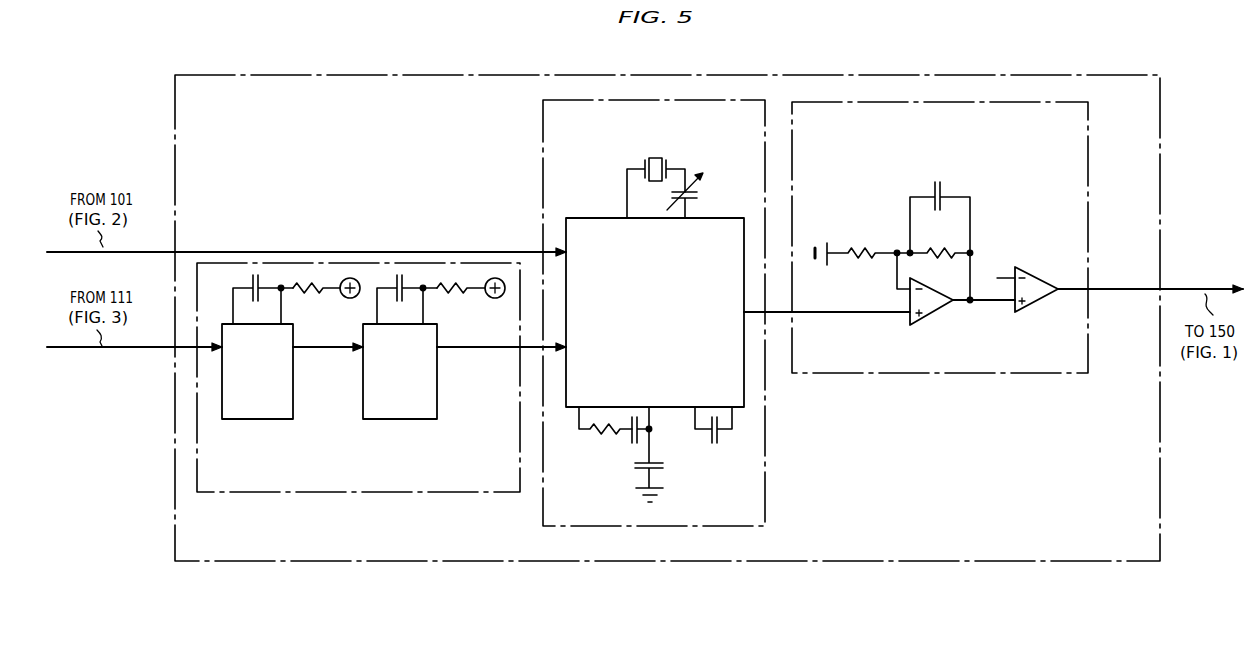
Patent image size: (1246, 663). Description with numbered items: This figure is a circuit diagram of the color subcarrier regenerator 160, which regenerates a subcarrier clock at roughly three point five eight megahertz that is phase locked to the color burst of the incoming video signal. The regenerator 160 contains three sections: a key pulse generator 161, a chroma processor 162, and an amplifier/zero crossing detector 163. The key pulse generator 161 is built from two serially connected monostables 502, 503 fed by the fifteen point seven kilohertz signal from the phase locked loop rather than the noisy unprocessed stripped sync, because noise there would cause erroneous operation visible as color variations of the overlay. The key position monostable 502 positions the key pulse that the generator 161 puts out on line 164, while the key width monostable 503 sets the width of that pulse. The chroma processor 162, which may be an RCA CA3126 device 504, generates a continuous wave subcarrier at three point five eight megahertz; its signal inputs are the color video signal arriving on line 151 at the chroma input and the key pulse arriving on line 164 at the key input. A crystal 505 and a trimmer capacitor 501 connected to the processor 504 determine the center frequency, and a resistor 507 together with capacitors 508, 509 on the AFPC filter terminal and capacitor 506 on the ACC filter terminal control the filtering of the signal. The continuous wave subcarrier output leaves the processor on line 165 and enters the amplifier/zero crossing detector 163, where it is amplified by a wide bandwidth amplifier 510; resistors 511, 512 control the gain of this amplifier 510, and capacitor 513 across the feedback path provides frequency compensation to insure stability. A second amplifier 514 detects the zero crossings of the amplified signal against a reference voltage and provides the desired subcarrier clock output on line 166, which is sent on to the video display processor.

The color subcarrier regenerator 160 is at (175, 103).
The color video signal line 151 is at (386, 251).
The key pulse generator 161 is at (461, 493).
The key position monostable 502 is at (268, 420).
The key width monostable 503 is at (400, 420).
The key pulse line 164 is at (477, 349).
The chroma processor 162 is at (765, 482).
The chroma processor integrated circuit 504 is at (584, 217).
The crystal 505 is at (644, 159).
The trimmer capacitor 501 is at (700, 187).
The resistor 507 is at (596, 433).
The capacitor 508 is at (630, 442).
The capacitor 509 is at (660, 470).
The capacitor 506 is at (719, 440).
The CW subcarrier output line 165 is at (777, 315).
The amplifier/zero crossing detector 163 is at (903, 373).
The resistor 511 is at (858, 247).
The resistor 512 is at (933, 250).
The capacitor 513 is at (933, 188).
The wide bandwidth amplifier 510 is at (926, 320).
The amplifier 514 is at (1035, 307).
The subcarrier clock output line 166 is at (1119, 284).